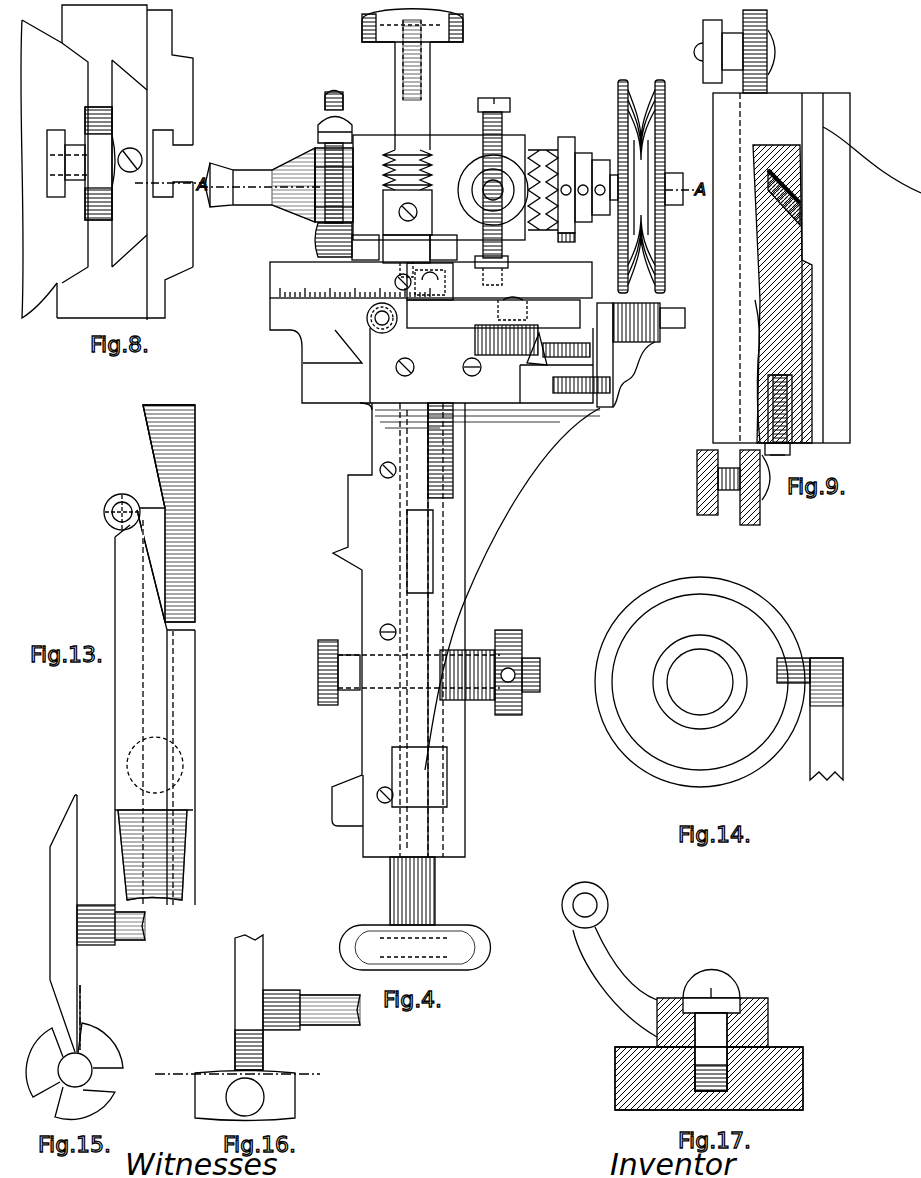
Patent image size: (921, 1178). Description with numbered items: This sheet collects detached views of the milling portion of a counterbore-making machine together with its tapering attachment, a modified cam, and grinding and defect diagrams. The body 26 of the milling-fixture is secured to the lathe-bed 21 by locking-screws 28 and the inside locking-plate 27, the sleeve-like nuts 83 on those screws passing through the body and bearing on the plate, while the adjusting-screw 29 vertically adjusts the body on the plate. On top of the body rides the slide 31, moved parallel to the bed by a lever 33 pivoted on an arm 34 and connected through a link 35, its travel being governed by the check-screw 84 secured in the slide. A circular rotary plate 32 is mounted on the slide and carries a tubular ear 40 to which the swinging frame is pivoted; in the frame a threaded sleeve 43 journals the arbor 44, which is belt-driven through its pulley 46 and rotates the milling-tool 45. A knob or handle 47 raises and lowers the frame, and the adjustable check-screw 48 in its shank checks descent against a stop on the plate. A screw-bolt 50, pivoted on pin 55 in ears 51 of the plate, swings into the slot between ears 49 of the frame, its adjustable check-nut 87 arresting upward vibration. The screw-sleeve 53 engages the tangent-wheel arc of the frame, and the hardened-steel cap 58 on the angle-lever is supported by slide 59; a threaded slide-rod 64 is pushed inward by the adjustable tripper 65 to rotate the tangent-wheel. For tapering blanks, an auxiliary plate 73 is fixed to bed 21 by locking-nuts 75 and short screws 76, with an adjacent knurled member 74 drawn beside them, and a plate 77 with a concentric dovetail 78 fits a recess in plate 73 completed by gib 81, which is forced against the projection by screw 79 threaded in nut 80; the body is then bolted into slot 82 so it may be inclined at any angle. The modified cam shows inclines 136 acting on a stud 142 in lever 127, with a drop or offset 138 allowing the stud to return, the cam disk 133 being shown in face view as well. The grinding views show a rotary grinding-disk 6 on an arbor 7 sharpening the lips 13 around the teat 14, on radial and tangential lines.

In FIG. 15, the rotary grinding-disk 6 is at (65, 923).
In FIG. 16, the rotary grinding-disk 6 is at (249, 1002).
In FIG. 15, the arbor 7 is at (111, 925).
In FIG. 16, the arbor 7 is at (311, 1010).
In FIG. 15, the lips 13 is at (74, 1071).
In FIG. 16, the lips 13 is at (245, 1096).
In FIG. 15, the stem, pin, or teat 14 is at (75, 1070).
In FIG. 16, the stem, pin, or teat 14 is at (245, 1097).
In FIG. 8, the lathe-bed 21 is at (54, 169).
In FIG. 4, the body of the milling-fixture 26 is at (480, 630).
In FIG. 4, the inside locking-plate 27 is at (466, 630).
In FIG. 4, the locking-screws 28 is at (424, 672).
In FIG. 4, the adjusting-screw 29 is at (415, 913).
In FIG. 4, the plate or slide 31 is at (431, 350).
In FIG. 4, the circular rotary plate 32 is at (431, 280).
In FIG. 4, the lever 33 is at (493, 312).
In FIG. 4, the arm 34 is at (510, 350).
In FIG. 4, the link 35 is at (435, 281).
In FIG. 4, the tubular ear 40 is at (503, 245).
In FIG. 4, the sleeve 43 is at (573, 186).
In FIG. 4, the arbor 44 is at (500, 190).
In FIG. 4, the milling-tool 45 is at (279, 183).
In FIG. 4, the pulley 46 is at (652, 186).
In FIG. 4, the knob or handle 47 is at (439, 187).
In FIG. 4, the adjustable check-screw 48 is at (494, 168).
In FIG. 4, the ears 49 is at (318, 180).
In FIG. 4, the screw-bolt 50 is at (333, 148).
In FIG. 4, the ears 51 is at (404, 247).
In FIG. 4, the screw-sleeve 53 is at (412, 99).
In FIG. 4, the pin 55 is at (318, 243).
In FIG. 4, the hardened-steel cap 58 is at (397, 212).
In FIG. 4, the slide 59 is at (406, 256).
In FIG. 4, the threaded slide-rod 64 is at (605, 345).
In FIG. 4, the adjustable tripper 65 is at (614, 355).
In FIG. 8, the auxiliary plate 73 is at (125, 162).
In FIG. 9, the auxiliary plate 73 is at (781, 268).
In FIG. 8, the knurled nut 74 is at (98, 163).
In FIG. 9, the knurled nut 74 is at (753, 275).
In FIG. 8, the locking-nuts 75 is at (68, 163).
In FIG. 9, the locking-nuts 75 is at (714, 275).
In FIG. 8, the short screws 76 is at (88, 147).
In FIG. 9, the short screws 76 is at (779, 270).
In FIG. 8, the plate 77 is at (170, 138).
In FIG. 9, the plate 77 is at (861, 268).
In FIG. 9, the concentric dovetail 78 is at (797, 235).
In FIG. 8, the screw 79 is at (138, 132).
In FIG. 9, the screw 79 is at (790, 452).
In FIG. 9, the nut 80 is at (757, 378).
In FIG. 8, the gib 81 is at (129, 163).
In FIG. 9, the gib 81 is at (824, 427).
In FIG. 8, the slot 82 is at (173, 163).
In FIG. 4, the sleeve-like nuts 83 is at (467, 666).
In FIG. 4, the check-screw 84 is at (384, 326).
In FIG. 4, the adjustable screw check-nut 87 is at (316, 138).
In FIG. 13, the lever 127 is at (155, 707).
In FIG. 14, the lever 127 is at (826, 719).
In FIG. 13, the disk 133 is at (166, 513).
In FIG. 14, the disk 133 is at (700, 682).
In FIG. 13, the inclines 136 is at (156, 413).
In FIG. 13, the drop or offset 138 is at (157, 464).
In FIG. 13, the stud 142 is at (110, 516).
In FIG. 14, the stud 142 is at (780, 670).